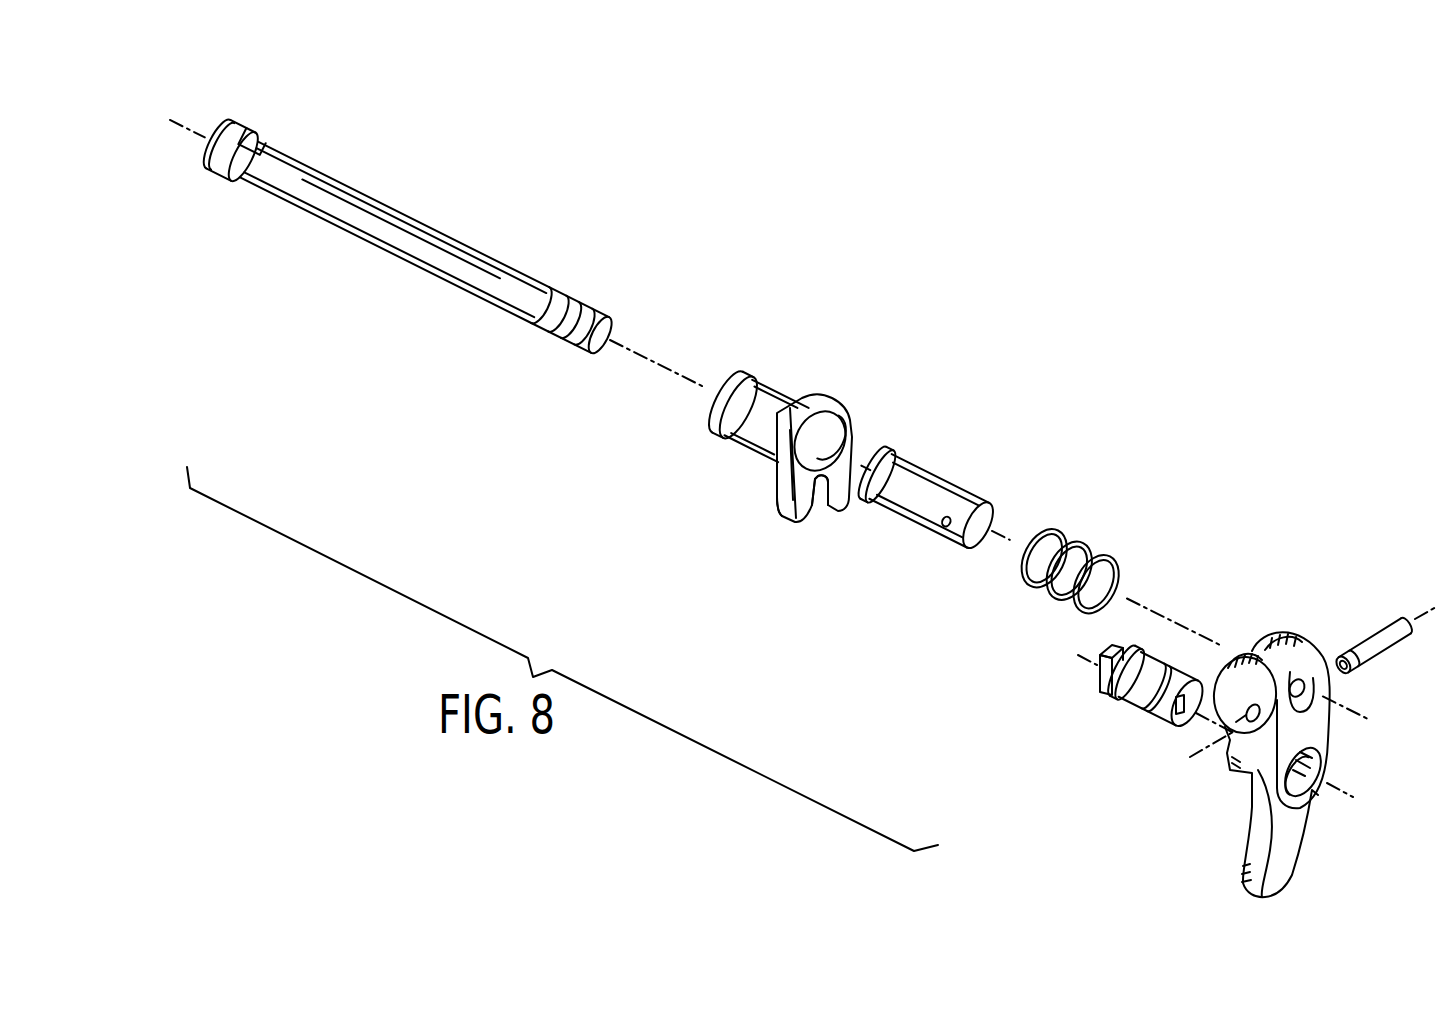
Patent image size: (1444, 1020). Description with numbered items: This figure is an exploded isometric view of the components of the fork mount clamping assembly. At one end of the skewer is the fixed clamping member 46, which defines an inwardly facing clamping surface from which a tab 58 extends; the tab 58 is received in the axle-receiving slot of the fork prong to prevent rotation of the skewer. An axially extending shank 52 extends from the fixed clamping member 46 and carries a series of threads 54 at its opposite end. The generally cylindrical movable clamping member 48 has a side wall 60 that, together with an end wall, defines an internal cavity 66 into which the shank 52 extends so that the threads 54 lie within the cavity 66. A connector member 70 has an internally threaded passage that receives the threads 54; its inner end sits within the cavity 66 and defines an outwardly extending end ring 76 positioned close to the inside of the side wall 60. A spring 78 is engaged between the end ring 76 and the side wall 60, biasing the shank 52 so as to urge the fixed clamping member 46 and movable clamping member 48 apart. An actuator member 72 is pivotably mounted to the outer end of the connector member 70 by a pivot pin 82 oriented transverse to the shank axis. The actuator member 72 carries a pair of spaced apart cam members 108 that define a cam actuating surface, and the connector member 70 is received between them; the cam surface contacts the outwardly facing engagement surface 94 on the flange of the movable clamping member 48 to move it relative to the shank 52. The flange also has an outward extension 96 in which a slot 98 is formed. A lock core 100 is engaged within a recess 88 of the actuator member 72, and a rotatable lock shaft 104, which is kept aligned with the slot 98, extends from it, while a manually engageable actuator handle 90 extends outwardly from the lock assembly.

The fixed clamping member 46 is at (391, 245).
The tab 58 is at (271, 140).
The shank 52 is at (447, 234).
The threads 54 is at (578, 307).
The movable clamping member 48 is at (799, 396).
The side wall 60 is at (770, 381).
The internal cavity 66 is at (818, 432).
The engagement surface 94 is at (793, 465).
The outward extension 96 is at (792, 519).
The slot 98 is at (817, 519).
The connector member 70 is at (962, 475).
The end ring 76 is at (904, 456).
The spring 78 is at (1082, 548).
The actuator member 72 is at (1302, 718).
The cam members 108 is at (1226, 652).
The recess 88 is at (1318, 786).
The actuator handle 90 is at (1246, 863).
The pivot pin 82 is at (1381, 634).
The lock core 100 is at (1131, 707).
The lock shaft 104 is at (1100, 663).